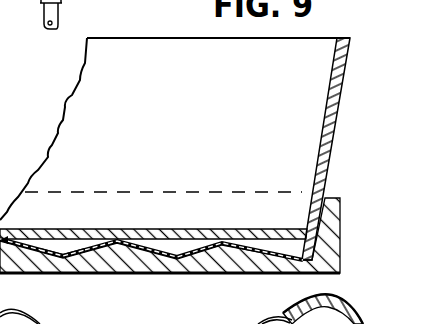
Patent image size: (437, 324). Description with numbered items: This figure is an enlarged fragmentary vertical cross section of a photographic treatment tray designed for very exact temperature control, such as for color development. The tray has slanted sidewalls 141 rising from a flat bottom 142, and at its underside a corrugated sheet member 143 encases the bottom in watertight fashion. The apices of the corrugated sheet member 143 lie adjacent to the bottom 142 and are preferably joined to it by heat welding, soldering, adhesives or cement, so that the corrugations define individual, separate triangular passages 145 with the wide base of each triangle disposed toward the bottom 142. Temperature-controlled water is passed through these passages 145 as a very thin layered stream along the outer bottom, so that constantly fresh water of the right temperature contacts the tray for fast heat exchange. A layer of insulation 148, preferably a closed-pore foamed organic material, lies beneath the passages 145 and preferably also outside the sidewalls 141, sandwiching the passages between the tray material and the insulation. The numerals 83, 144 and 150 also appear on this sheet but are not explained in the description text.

The nozzle (adjacent figure) 83 is at (42, 12).
The slanted sidewalls 141 is at (331, 77).
The bottom 142 is at (177, 229).
The corrugated sheet member 143 is at (206, 265).
The crests of corrugated sheet 144 is at (117, 240).
The triangular passages 145 is at (62, 252).
The layer of insulation 148 is at (118, 264).
The lower member 150 is at (55, 317).